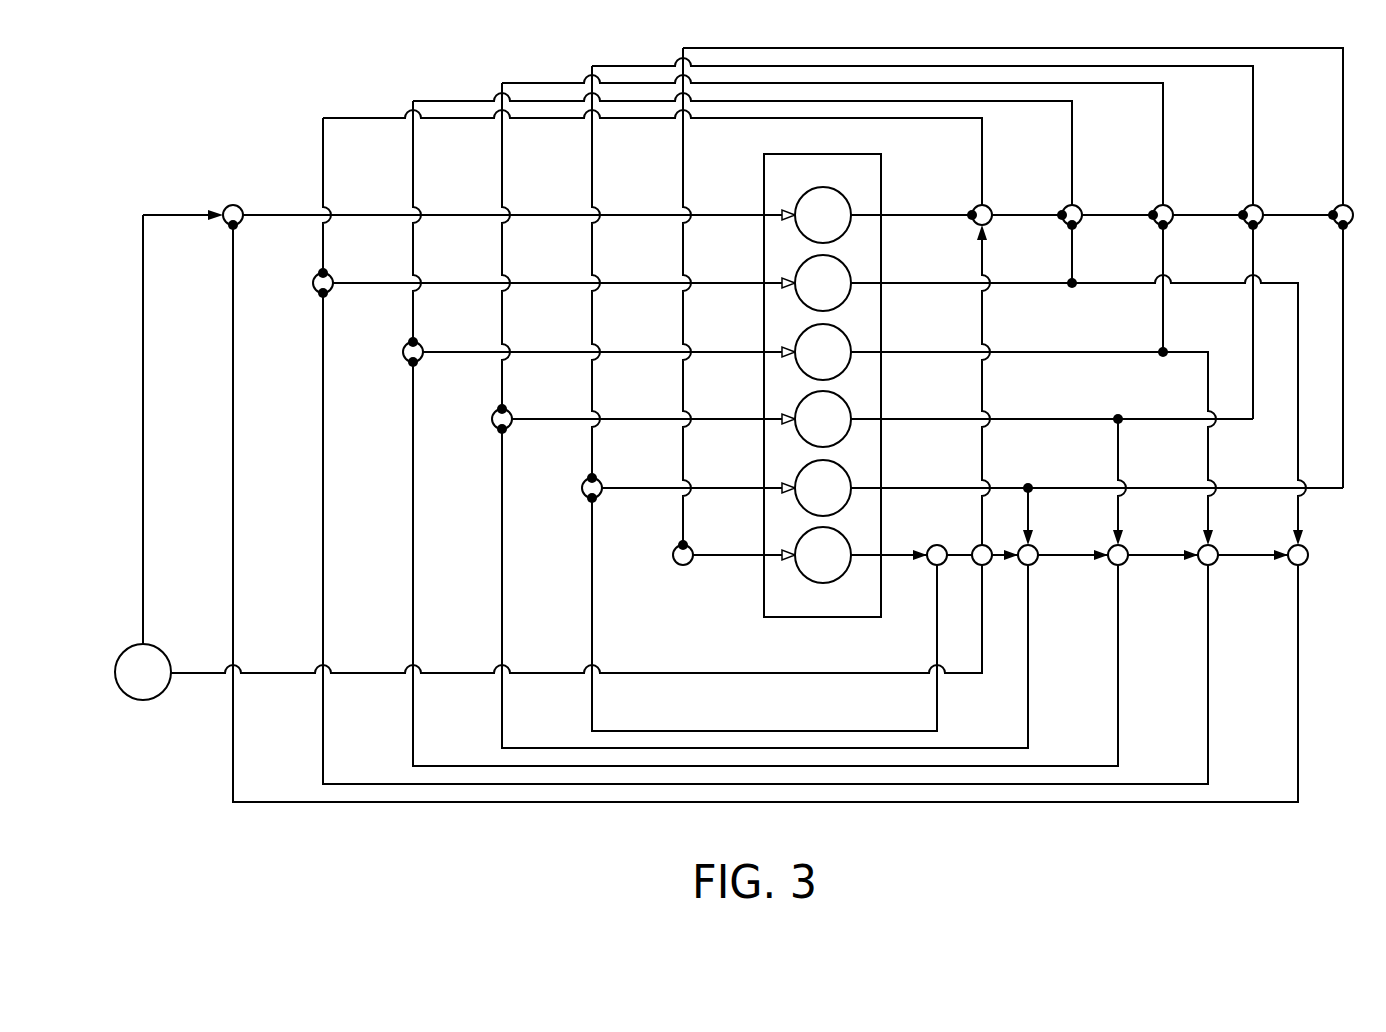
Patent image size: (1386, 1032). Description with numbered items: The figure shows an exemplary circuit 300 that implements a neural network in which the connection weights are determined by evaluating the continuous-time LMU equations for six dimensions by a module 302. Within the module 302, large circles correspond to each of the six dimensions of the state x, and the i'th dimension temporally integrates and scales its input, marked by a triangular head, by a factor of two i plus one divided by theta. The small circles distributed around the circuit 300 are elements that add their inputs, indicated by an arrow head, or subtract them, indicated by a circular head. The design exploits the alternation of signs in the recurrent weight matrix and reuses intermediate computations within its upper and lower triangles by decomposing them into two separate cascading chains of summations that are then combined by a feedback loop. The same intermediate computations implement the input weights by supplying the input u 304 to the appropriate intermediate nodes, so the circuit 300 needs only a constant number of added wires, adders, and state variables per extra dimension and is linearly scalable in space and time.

The circuit 300 is at (185, 82).
The module 302 is at (866, 154).
The input u 304 is at (161, 648).